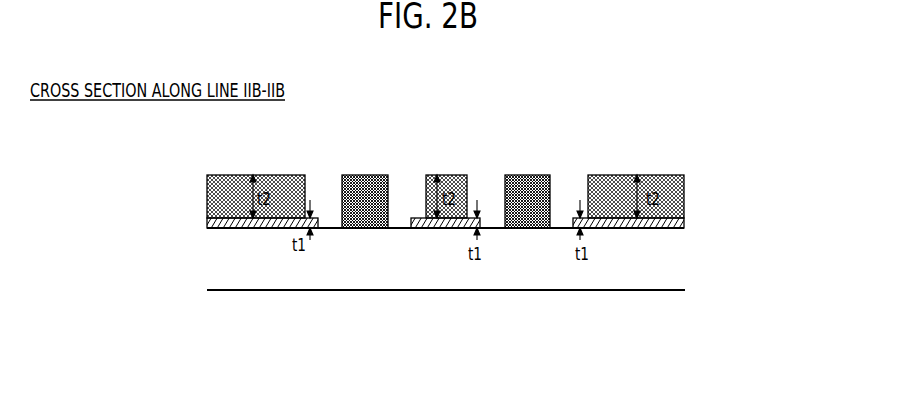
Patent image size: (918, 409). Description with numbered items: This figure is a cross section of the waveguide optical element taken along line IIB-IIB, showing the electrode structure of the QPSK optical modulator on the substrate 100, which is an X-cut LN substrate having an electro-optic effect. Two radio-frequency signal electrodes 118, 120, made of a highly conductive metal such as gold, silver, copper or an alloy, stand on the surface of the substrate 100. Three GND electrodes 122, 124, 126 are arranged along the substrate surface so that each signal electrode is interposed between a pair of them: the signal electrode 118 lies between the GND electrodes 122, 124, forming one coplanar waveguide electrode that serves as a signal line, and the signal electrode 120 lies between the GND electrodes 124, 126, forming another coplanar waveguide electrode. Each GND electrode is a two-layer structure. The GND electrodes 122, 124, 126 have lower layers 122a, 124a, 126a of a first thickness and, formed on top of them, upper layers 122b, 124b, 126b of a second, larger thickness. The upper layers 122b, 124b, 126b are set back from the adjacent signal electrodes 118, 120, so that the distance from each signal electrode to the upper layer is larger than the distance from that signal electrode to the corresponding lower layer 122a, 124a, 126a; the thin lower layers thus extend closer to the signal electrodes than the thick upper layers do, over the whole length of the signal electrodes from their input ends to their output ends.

The substrate 100 is at (655, 285).
The signal electrode 118 is at (368, 202).
The signal electrode 120 is at (532, 203).
The GND electrode 122 is at (190, 223).
The lower layer 122a is at (207, 225).
The upper layer 122b is at (207, 208).
The GND electrode 124 is at (700, 223).
The lower layer 124a is at (684, 226).
The upper layer 124b is at (684, 209).
The GND electrode 126 is at (427, 144).
The lower layer 126a is at (418, 217).
The upper layer 126b is at (428, 175).